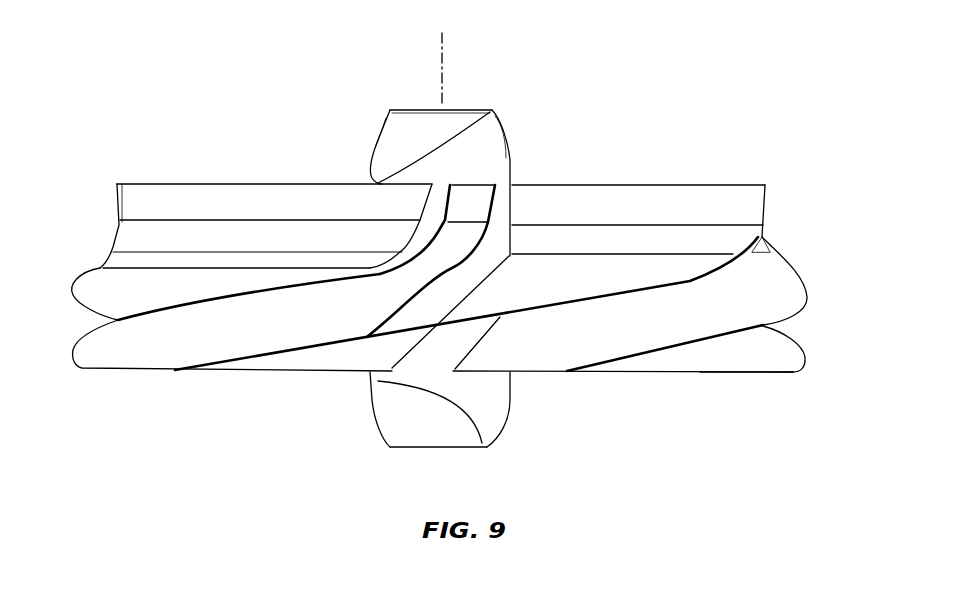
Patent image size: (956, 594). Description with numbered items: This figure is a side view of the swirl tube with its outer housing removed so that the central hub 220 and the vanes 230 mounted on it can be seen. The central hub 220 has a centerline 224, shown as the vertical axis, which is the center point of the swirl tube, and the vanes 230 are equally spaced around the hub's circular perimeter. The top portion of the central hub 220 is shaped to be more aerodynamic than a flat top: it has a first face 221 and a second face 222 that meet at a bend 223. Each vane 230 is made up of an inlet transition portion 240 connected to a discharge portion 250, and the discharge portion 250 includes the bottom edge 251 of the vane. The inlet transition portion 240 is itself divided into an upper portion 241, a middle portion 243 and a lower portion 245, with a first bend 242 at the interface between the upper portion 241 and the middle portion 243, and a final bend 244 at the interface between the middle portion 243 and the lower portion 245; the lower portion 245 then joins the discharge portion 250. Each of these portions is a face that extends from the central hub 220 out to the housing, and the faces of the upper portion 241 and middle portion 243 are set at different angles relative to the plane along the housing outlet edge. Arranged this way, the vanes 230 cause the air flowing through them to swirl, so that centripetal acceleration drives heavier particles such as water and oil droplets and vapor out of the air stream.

The central hub 220 is at (500, 167).
The first face 221 is at (393, 153).
The second face 222 is at (497, 120).
The bend 223 is at (400, 108).
The centerline 224 is at (440, 58).
The vanes 230 is at (733, 295).
The inlet transition portion 240 is at (514, 251).
The upper portion 241 is at (630, 195).
The first bend 242 is at (683, 225).
The middle portion 243 is at (718, 237).
The final bend 244 is at (733, 255).
The lower portion 245 is at (737, 277).
The discharge portion 250 is at (608, 348).
The bottom edge 251 is at (765, 377).